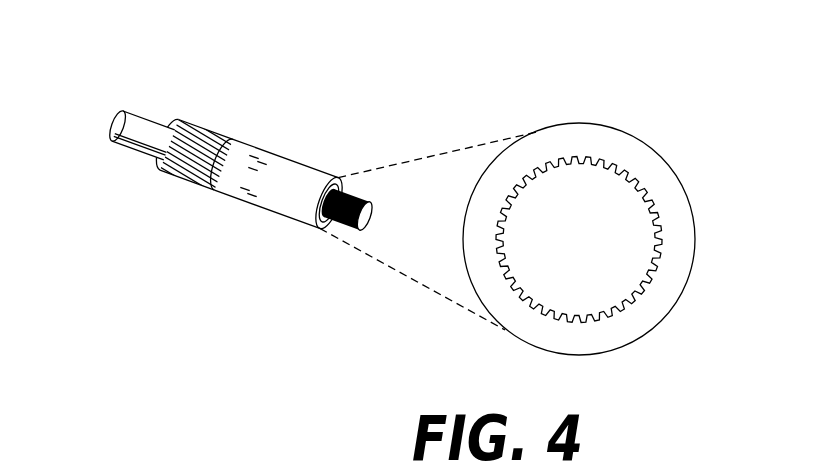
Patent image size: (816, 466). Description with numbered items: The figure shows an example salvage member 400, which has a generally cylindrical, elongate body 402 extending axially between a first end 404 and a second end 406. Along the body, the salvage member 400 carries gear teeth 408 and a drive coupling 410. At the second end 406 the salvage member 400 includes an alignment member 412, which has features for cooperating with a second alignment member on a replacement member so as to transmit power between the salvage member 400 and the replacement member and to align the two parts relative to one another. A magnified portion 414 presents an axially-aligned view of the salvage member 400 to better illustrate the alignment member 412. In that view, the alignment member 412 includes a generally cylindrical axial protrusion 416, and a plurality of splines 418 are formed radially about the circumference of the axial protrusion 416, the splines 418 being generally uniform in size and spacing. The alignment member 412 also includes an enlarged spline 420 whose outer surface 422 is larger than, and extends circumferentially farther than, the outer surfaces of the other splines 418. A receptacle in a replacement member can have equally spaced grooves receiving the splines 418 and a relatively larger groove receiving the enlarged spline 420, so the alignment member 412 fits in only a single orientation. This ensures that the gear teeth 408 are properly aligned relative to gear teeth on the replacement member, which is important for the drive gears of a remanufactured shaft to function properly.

The salvage member 400 is at (231, 131).
The elongate body 402 is at (272, 193).
The first end 404 is at (152, 79).
The second end 406 is at (362, 157).
The gear teeth 408 is at (177, 165).
The drive coupling 410 is at (110, 163).
The alignment member 412 is at (333, 261).
The magnified portion 414 is at (580, 234).
The axial protrusion 416 is at (613, 240).
The splines 418 is at (530, 308).
The enlarged spline 420 is at (573, 158).
The outer surface 422 is at (585, 157).